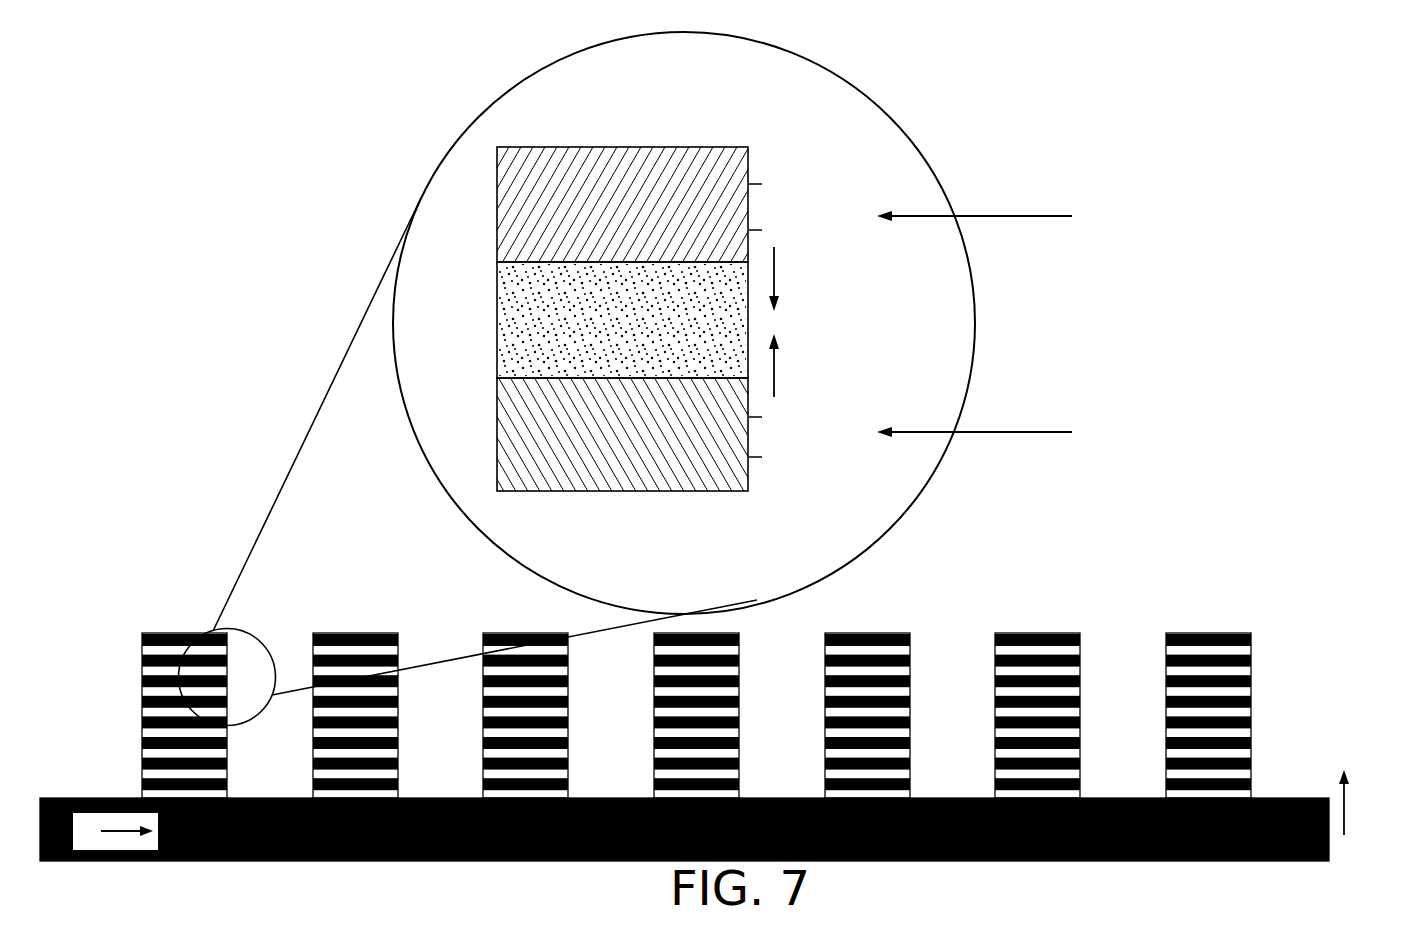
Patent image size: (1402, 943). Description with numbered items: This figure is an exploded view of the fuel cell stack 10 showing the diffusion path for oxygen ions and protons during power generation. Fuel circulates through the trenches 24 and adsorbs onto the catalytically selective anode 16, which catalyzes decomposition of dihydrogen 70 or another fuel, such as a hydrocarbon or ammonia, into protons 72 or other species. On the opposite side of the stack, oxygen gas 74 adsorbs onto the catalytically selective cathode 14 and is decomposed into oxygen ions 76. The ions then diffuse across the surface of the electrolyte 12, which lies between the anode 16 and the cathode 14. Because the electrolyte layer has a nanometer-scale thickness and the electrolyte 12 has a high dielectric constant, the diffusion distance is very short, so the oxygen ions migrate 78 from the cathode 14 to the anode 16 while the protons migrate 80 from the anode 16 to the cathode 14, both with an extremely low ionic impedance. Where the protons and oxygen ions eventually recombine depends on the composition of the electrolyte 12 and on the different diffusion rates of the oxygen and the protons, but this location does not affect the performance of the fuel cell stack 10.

The fuel cell device 10 is at (1278, 705).
The electrolyte 12 is at (497, 322).
The catalytically selective cathode 14 is at (653, 491).
The catalytically selective anode 16 is at (700, 147).
The trenches 24 is at (1117, 670).
The dihydrogen 70 is at (1095, 200).
The protons 72 is at (787, 190).
The oxygen gas 74 is at (1097, 432).
The oxygen ions 76 is at (783, 466).
The oxygen ion migration 78 is at (776, 372).
The proton migration 80 is at (776, 272).